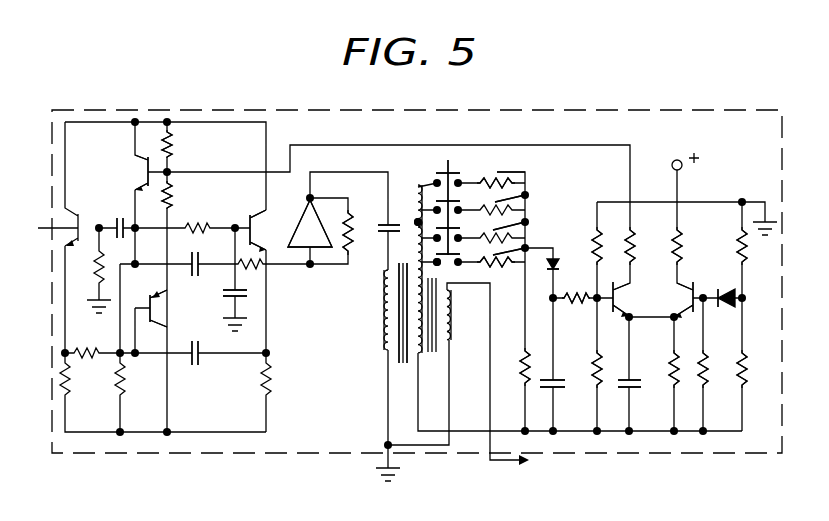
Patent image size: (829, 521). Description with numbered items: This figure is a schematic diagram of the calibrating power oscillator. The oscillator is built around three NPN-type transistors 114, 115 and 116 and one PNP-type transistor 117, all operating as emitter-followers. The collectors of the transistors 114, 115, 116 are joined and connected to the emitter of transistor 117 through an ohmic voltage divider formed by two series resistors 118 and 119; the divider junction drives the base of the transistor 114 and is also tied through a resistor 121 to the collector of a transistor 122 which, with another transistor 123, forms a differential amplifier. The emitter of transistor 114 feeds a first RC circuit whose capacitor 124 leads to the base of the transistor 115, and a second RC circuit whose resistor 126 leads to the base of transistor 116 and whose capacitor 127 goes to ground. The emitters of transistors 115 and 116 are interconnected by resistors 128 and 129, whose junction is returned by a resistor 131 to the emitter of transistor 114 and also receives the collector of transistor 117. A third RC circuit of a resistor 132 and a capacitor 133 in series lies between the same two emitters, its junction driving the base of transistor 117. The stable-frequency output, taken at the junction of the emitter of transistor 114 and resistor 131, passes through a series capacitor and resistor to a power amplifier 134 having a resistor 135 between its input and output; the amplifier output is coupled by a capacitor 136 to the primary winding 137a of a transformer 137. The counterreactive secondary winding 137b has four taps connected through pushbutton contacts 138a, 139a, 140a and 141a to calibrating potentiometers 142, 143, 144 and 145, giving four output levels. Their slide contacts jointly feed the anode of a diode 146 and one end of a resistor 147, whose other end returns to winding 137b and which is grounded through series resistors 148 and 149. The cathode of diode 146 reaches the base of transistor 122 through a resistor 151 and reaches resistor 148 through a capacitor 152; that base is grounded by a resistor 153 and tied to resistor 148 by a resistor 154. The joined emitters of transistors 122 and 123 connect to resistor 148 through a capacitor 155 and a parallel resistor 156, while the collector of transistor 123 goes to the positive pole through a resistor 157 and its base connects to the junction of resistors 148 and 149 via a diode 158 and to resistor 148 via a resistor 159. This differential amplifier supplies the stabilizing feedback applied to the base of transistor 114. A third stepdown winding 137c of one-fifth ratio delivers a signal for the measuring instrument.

The NPN-type transistor 114 is at (146, 168).
The NPN-type transistor 115 is at (50, 228).
The NPN-type transistor 116 is at (250, 217).
The PNP-type transistor 117 is at (157, 309).
The resistor 118 is at (172, 143).
The resistor 119 is at (174, 195).
The resistor 121 is at (633, 240).
The transistor 122 is at (618, 295).
The transistor 123 is at (694, 287).
The capacitor 124 is at (119, 218).
The resistor 126 is at (196, 214).
The capacitor 127 is at (223, 292).
The resistor 128 is at (68, 383).
The resistor 129 is at (262, 382).
The resistor 131 is at (121, 386).
The resistor / capacitor 132 is at (201, 247).
The capacitor / resistor 133 is at (193, 360).
The power amplifier 134 is at (292, 237).
The resistor 135 is at (353, 240).
The capacitor 136 is at (378, 227).
The transformer 137 is at (384, 356).
The primary winding 137a is at (383, 334).
The secondary winding 137b is at (420, 353).
The third stepdown winding 137c is at (455, 308).
The contact 138a is at (465, 180).
The contact 139a is at (437, 182).
The contact 140a is at (417, 220).
The contact 141a is at (439, 264).
The calibrating potentiometer 142 is at (497, 172).
The calibrating potentiometer 143 is at (495, 202).
The calibrating potentiometer 144 is at (493, 230).
The calibrating potentiometer 145 is at (493, 255).
The diode 146 is at (572, 263).
The resistor 147 is at (520, 375).
The resistor 148 is at (742, 378).
The resistor 149 is at (746, 255).
The resistor 151 is at (587, 294).
The capacitor 152 is at (565, 385).
The resistor 153 is at (590, 232).
The resistor 154 is at (593, 358).
The capacitor 155 is at (641, 386).
The resistor 156 is at (670, 364).
The resistor 157 is at (680, 241).
The diode 158 is at (733, 307).
The resistor 159 is at (705, 378).